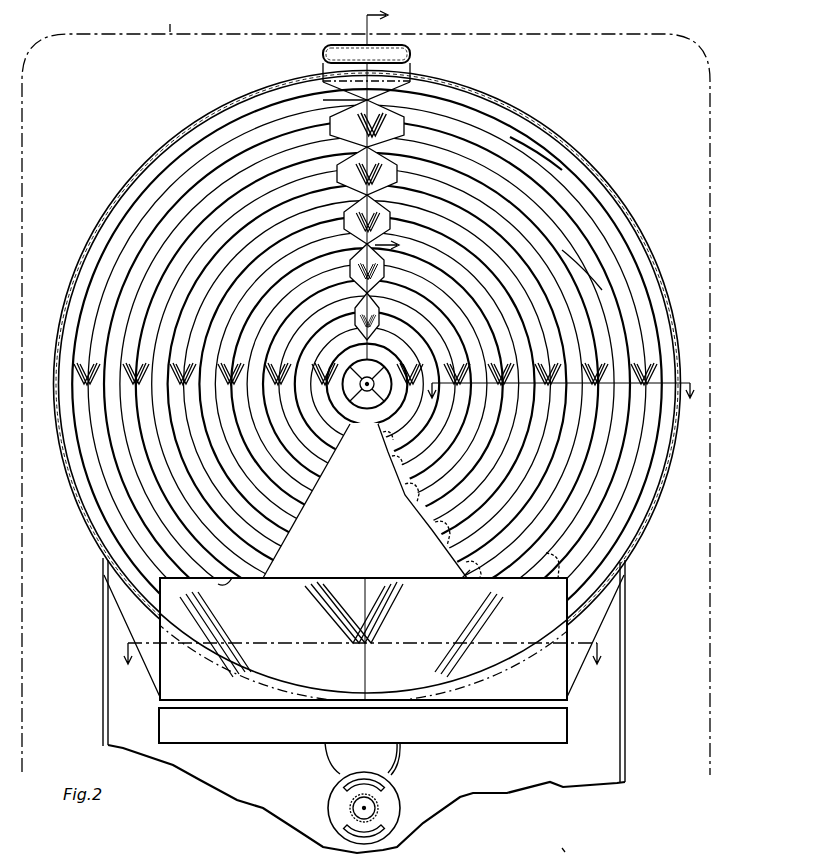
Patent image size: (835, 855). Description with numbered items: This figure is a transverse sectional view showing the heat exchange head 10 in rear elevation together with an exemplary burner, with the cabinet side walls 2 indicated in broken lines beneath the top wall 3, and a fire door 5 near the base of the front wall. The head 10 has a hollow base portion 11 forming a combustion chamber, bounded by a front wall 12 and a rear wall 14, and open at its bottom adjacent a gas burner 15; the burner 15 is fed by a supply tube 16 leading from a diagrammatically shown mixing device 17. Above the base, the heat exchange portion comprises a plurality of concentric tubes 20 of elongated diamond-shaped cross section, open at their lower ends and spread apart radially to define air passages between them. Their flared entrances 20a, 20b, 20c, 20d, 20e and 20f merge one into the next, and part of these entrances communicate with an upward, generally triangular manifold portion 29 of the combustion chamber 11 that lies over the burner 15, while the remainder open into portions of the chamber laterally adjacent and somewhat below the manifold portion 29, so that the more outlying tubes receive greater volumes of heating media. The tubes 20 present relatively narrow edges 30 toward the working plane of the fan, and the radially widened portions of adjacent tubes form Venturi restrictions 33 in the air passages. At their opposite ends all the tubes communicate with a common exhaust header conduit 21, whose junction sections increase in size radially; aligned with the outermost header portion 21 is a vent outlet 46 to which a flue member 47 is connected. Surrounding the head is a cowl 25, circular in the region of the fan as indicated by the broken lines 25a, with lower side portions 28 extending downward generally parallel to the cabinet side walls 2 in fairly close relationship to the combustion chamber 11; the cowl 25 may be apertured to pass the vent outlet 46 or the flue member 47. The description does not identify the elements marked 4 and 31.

The side walls 2 is at (712, 228).
The top wall 3 is at (423, 215).
The section line 4- 4 is at (388, 185).
The fire door 5 is at (359, 666).
The heat exchange head 10 is at (606, 201).
The hollow base portion 11 is at (552, 694).
The front wall 12 is at (552, 846).
The rear wall 14 is at (363, 639).
The gas burner 15 is at (235, 743).
The supply tube 16 is at (345, 767).
The mixing device 17 is at (392, 803).
The concentric tubes 20 is at (105, 508).
The tube entrance 20a is at (383, 436).
The tube entrance 20b is at (392, 466).
The tube entrance 20c is at (418, 503).
The tube entrance 20d is at (455, 560).
The tube entrance 20e is at (540, 584).
The tube entrance 20f is at (558, 586).
The exhaust header conduit 21 is at (364, 247).
The cowl 25 is at (147, 152).
The broken lines 25a is at (226, 668).
The lower side portions 28 is at (103, 637).
The manifold portion 29 is at (365, 501).
The narrow edges 30 is at (512, 138).
The channel end 31 is at (470, 579).
The Venturi restrictions 33 is at (604, 265).
The vent outlet 46 is at (405, 71).
The flue member 47 is at (323, 51).